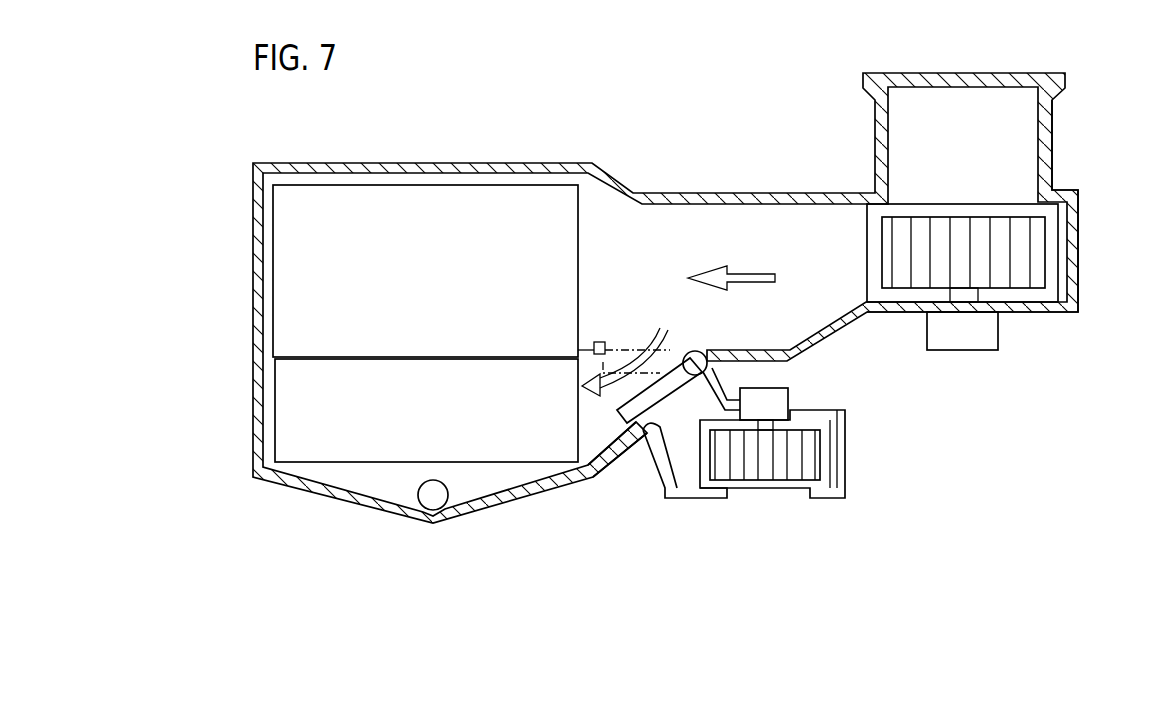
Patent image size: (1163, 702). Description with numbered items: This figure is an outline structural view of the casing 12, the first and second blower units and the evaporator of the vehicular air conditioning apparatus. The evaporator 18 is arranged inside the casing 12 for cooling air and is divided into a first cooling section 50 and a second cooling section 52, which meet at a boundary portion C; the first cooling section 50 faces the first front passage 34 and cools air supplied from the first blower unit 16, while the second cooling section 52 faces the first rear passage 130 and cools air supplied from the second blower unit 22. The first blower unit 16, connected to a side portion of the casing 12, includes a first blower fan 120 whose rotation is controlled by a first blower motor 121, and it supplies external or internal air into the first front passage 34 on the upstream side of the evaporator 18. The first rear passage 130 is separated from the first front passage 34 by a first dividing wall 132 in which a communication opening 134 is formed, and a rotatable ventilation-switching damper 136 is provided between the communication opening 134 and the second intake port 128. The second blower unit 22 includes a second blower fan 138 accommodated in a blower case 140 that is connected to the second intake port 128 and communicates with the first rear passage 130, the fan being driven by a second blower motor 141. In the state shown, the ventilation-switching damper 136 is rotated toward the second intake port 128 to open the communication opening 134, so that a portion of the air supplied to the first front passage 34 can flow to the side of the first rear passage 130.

The casing 12 is at (474, 161).
The evaporator 18 is at (395, 348).
The first cooling section 50 is at (293, 240).
The second cooling section 52 is at (293, 389).
The boundary portion C is at (402, 353).
The first front passage 34 is at (747, 232).
The first blower unit 16 is at (1002, 245).
The first blower fan 120 is at (962, 222).
The first blower motor 121 is at (960, 340).
The communication opening 134 is at (614, 347).
The first dividing wall 132 is at (752, 356).
The ventilation-switching damper 136 is at (660, 392).
The first rear passage 130 is at (593, 445).
The second intake port 128 is at (672, 478).
The second blower unit 22 is at (774, 465).
The second blower fan 138 is at (765, 468).
The blower case 140 is at (838, 498).
The second blower motor 141 is at (774, 388).